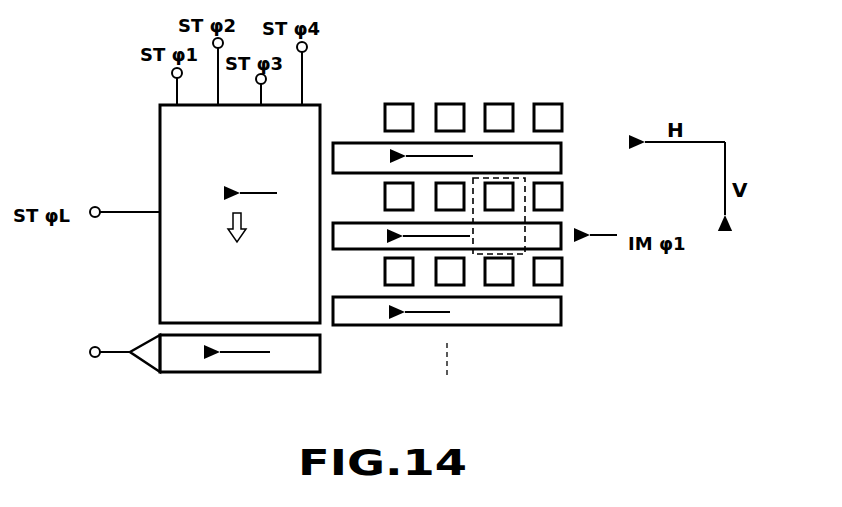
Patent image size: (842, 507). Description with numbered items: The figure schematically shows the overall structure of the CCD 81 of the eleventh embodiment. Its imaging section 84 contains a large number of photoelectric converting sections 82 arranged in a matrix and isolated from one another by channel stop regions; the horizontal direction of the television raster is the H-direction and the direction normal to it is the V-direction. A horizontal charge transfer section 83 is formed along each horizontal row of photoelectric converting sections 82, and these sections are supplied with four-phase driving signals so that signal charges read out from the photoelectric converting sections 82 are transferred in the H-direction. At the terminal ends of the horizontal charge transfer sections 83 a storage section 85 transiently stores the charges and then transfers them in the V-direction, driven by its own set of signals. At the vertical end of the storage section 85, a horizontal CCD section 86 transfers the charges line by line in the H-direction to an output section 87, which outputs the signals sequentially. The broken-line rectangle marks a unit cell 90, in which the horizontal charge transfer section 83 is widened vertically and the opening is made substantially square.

The CCD 81 is at (548, 336).
The photoelectric converting section 82 is at (500, 110).
The horizontal charge transfer section 83 is at (560, 222).
The imaging section 84 is at (466, 86).
The storage section 85 is at (175, 267).
The horizontal CCD section 86 is at (270, 362).
The output section 87 is at (157, 350).
The unit cell 90 is at (525, 232).